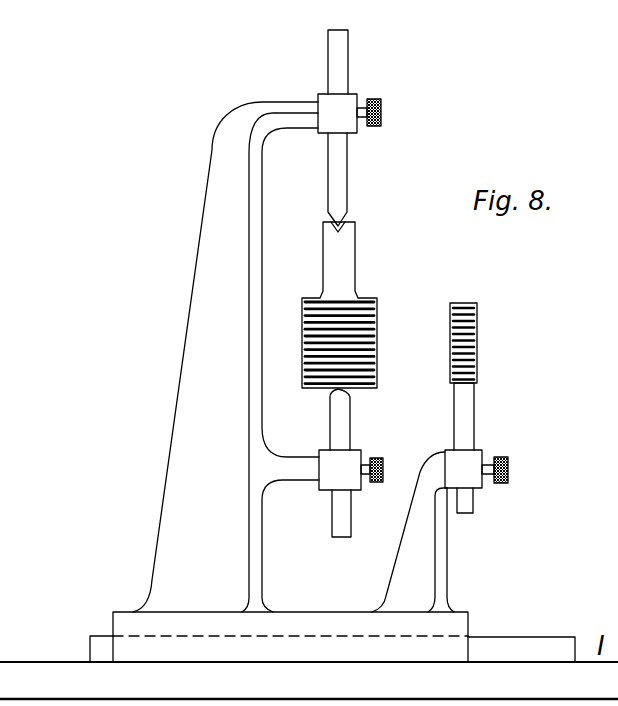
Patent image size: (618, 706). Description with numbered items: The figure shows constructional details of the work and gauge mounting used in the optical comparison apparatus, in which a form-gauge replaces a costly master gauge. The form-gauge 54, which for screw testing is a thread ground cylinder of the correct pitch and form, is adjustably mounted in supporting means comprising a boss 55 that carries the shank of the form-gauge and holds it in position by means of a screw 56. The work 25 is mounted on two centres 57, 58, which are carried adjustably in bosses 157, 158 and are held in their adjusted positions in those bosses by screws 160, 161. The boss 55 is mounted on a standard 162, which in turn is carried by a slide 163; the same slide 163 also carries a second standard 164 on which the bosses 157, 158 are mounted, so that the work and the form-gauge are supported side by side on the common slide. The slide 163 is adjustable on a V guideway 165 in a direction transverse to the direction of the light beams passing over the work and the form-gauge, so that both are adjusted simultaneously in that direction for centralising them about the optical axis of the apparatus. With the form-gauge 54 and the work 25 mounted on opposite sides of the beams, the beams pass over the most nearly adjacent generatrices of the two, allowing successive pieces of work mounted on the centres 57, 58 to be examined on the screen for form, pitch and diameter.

The work 25 is at (378, 330).
The form-gauge 54 is at (478, 356).
The boss 55 is at (463, 463).
The screw 56 is at (508, 470).
The centre 57 is at (347, 175).
The centre 58 is at (342, 410).
The boss 157 is at (350, 97).
The boss 158 is at (348, 488).
The screw 160 is at (383, 116).
The screw 161 is at (383, 463).
The standard 162 is at (420, 544).
The slide 163 is at (448, 618).
The standard 164 is at (200, 376).
The V guideway 165 is at (553, 643).